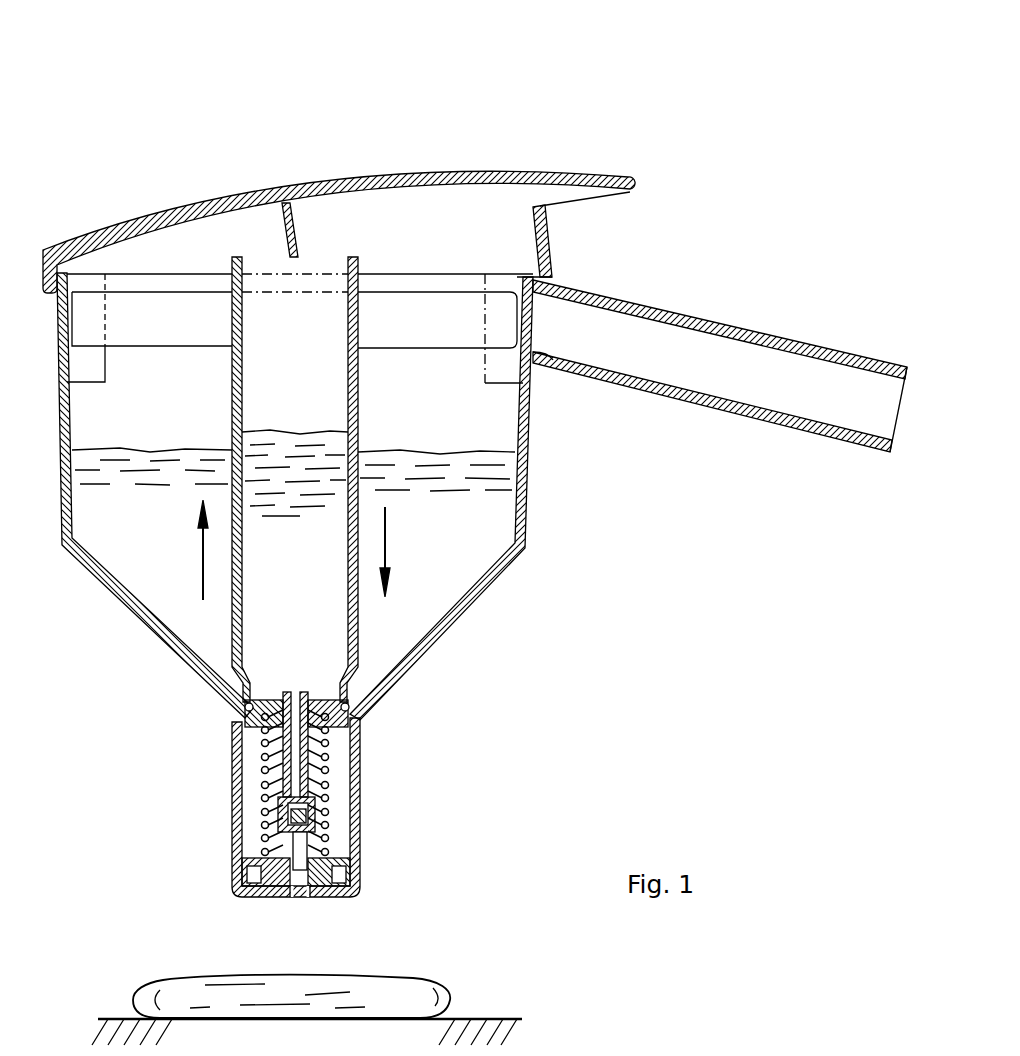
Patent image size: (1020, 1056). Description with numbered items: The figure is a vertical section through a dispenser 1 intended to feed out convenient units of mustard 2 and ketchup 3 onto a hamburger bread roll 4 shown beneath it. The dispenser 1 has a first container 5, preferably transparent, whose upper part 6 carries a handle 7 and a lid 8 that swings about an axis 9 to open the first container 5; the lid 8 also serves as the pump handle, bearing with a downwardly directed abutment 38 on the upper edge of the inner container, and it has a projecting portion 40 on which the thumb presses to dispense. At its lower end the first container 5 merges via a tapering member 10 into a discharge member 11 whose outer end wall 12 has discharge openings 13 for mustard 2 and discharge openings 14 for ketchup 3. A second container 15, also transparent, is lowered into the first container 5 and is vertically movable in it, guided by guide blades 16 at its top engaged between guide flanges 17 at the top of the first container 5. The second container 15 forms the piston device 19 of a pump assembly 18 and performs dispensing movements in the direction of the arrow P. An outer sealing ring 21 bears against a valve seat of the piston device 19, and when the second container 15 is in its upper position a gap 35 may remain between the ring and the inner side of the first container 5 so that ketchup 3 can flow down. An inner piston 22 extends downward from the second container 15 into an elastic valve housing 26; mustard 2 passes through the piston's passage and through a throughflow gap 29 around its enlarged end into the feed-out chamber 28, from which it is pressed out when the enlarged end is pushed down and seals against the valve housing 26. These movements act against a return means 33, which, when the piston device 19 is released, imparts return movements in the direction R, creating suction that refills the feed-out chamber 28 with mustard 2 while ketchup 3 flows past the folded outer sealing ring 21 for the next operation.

The dispenser 1 is at (560, 78).
The mustard 2 is at (303, 443).
The ketchup 3 is at (493, 496).
The hamburger bread roll 4 is at (450, 1000).
The first container 5 is at (523, 535).
The upper part 6 is at (533, 408).
The handle 7 is at (817, 343).
The lid 8 is at (197, 203).
The axis 9 is at (80, 283).
The tapering member 10 is at (460, 617).
The discharge member 11 is at (360, 797).
The outer end wall 12 is at (297, 897).
The discharge openings for mustard 13 is at (310, 897).
The discharge openings for ketchup 14 is at (247, 897).
The second container 15 is at (355, 320).
The guide blades 16 is at (453, 313).
The guide flanges 17 is at (497, 362).
The pump assembly 18 is at (353, 128).
The piston device 19 is at (377, 757).
The outer sealing ring 21 is at (247, 704).
The inner piston 22 is at (283, 757).
The valve housing 26 is at (320, 833).
The feed-out chamber 28 is at (287, 843).
The throughflow gap 29 is at (315, 818).
The return means 33 is at (283, 750).
The gap 35 is at (367, 697).
The downwardly directed abutment 38 is at (305, 200).
The projecting portion 40 is at (588, 177).
The feed-out movement direction P is at (385, 547).
The return movement direction R is at (203, 572).